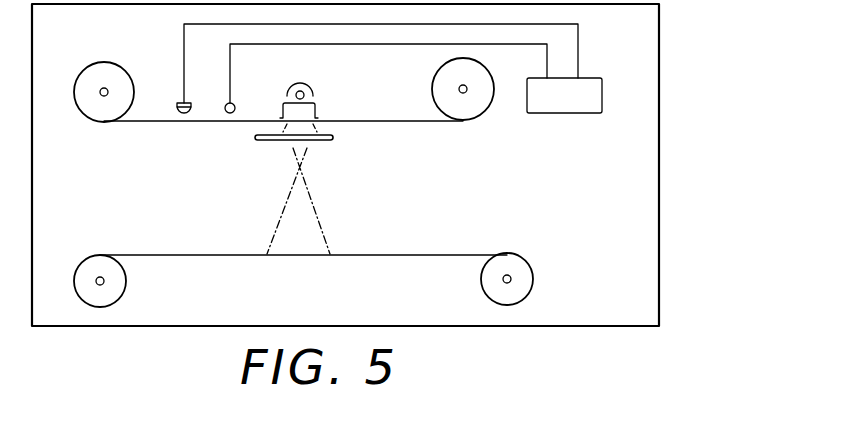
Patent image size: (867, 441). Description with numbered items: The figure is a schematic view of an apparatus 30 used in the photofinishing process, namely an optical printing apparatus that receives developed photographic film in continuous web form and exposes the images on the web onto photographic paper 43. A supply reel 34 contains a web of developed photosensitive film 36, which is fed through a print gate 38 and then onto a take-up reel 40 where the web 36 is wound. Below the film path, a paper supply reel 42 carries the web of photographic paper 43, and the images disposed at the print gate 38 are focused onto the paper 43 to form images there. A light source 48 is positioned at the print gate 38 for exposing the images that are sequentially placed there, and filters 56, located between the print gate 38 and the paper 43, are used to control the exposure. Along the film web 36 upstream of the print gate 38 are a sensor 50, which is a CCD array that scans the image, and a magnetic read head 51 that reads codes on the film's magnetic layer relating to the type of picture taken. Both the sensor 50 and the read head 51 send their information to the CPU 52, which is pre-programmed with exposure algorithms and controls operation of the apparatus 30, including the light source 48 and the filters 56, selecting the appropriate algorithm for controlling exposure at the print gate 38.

The apparatus 30 is at (689, 52).
The supply reel 34 is at (102, 67).
The web of developed photosensitive film 36 is at (195, 123).
The print gate 38 is at (318, 108).
The take-up reel 40 is at (466, 116).
The paper supply reel 42 is at (95, 262).
The photographic paper 43 is at (207, 254).
The light source 48 is at (316, 88).
The sensor 50 is at (235, 104).
The magnetic read head 51 is at (177, 101).
The CPU 52 is at (562, 114).
The filters 56 is at (330, 142).